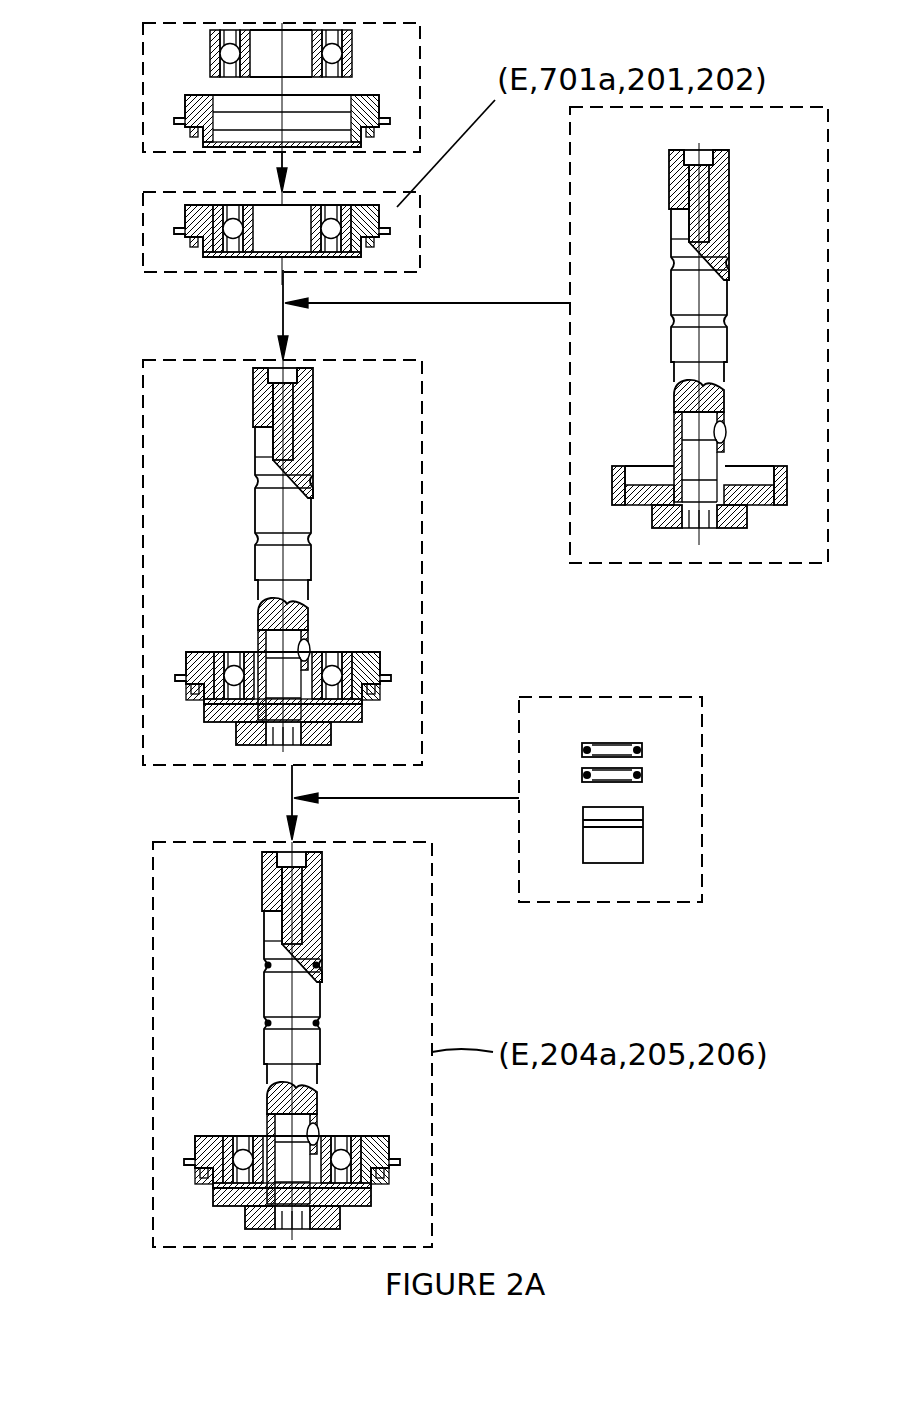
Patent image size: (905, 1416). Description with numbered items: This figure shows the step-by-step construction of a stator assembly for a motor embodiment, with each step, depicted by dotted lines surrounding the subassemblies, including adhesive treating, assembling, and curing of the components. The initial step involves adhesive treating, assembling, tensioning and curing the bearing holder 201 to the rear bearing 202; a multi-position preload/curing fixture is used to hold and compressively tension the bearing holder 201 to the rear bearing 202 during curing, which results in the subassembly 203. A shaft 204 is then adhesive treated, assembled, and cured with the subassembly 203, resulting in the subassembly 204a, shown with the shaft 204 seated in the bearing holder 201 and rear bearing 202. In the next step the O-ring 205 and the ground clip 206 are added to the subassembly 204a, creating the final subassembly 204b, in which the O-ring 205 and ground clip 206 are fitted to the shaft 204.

The bearing holder 201 is at (183, 111).
The rear bearing 202 is at (218, 53).
The subassembly 203 is at (183, 230).
The shaft 204 is at (713, 350).
The subassembly 204a is at (297, 567).
The subassembly 204b is at (305, 995).
The O-ring 205 is at (638, 762).
The ground clip 206 is at (633, 824).